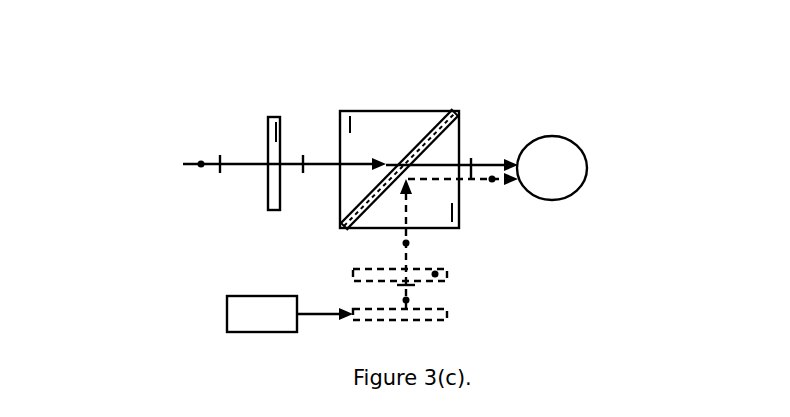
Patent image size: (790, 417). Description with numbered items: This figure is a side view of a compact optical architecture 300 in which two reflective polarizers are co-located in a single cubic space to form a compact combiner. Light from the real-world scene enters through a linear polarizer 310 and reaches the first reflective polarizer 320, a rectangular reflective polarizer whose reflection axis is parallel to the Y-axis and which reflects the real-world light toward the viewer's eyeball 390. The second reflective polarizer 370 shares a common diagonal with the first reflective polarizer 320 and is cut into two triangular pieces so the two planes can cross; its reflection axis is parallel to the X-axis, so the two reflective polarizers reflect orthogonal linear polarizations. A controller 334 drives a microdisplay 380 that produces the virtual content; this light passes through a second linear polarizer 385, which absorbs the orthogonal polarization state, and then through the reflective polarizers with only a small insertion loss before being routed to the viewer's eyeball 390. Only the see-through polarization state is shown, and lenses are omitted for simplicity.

The optical system 300 is at (137, 50).
The linear polarizer 310 is at (269, 116).
The first reflective polarizer 320 is at (339, 110).
The second reflective polarizer 370 is at (458, 112).
The viewer's eyeball 390 is at (552, 200).
The linear polarizer 385 is at (447, 272).
The microdisplay 380 is at (447, 314).
The controller 334 is at (290, 314).